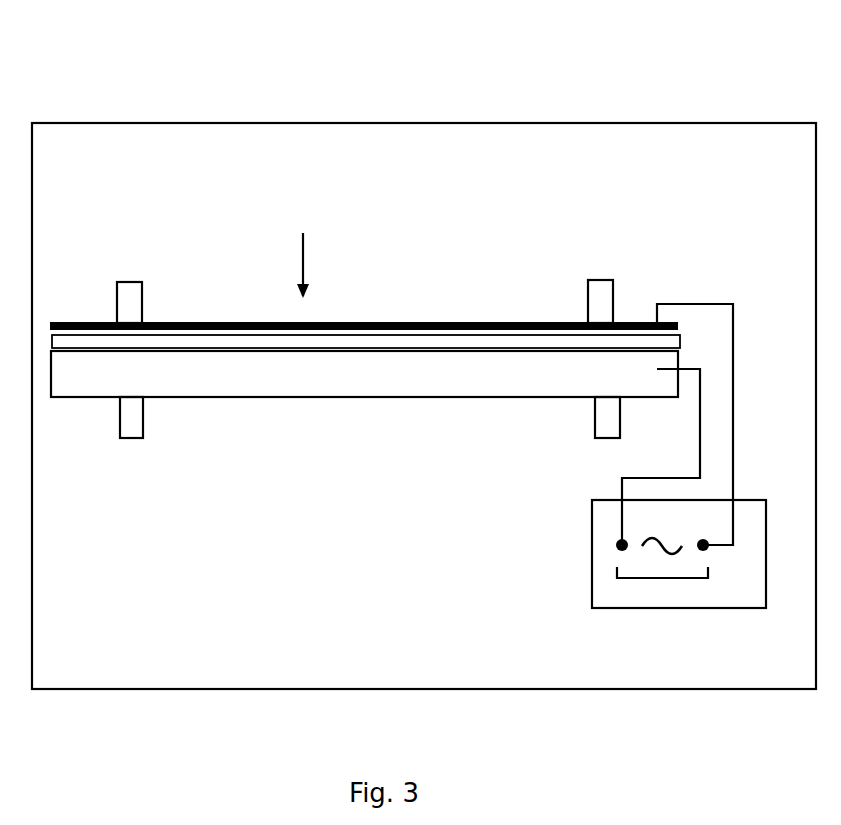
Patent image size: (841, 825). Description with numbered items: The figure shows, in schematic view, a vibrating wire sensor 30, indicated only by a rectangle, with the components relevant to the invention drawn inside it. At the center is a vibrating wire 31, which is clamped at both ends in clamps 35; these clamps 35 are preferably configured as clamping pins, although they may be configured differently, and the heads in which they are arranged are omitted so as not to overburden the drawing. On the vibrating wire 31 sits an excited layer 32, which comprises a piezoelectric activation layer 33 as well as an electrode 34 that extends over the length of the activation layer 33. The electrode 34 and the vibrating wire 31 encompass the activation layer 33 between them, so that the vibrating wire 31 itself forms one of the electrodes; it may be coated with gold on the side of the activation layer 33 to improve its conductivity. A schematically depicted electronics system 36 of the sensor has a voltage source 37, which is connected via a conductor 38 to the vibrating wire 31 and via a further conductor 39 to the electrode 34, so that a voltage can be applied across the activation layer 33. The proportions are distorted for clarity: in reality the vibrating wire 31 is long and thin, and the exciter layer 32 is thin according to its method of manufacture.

The vibrating wire sensor 30 is at (448, 122).
The vibrating wire 31 is at (268, 385).
The excited layer 32 is at (302, 248).
The piezoelectric activation layer 33 is at (363, 343).
The electrode 34 is at (448, 323).
The clamps 35 is at (132, 313).
The electronics system 36 is at (590, 543).
The voltage source 37 is at (665, 580).
The conductor 38 is at (700, 423).
The conductor 39 is at (700, 303).